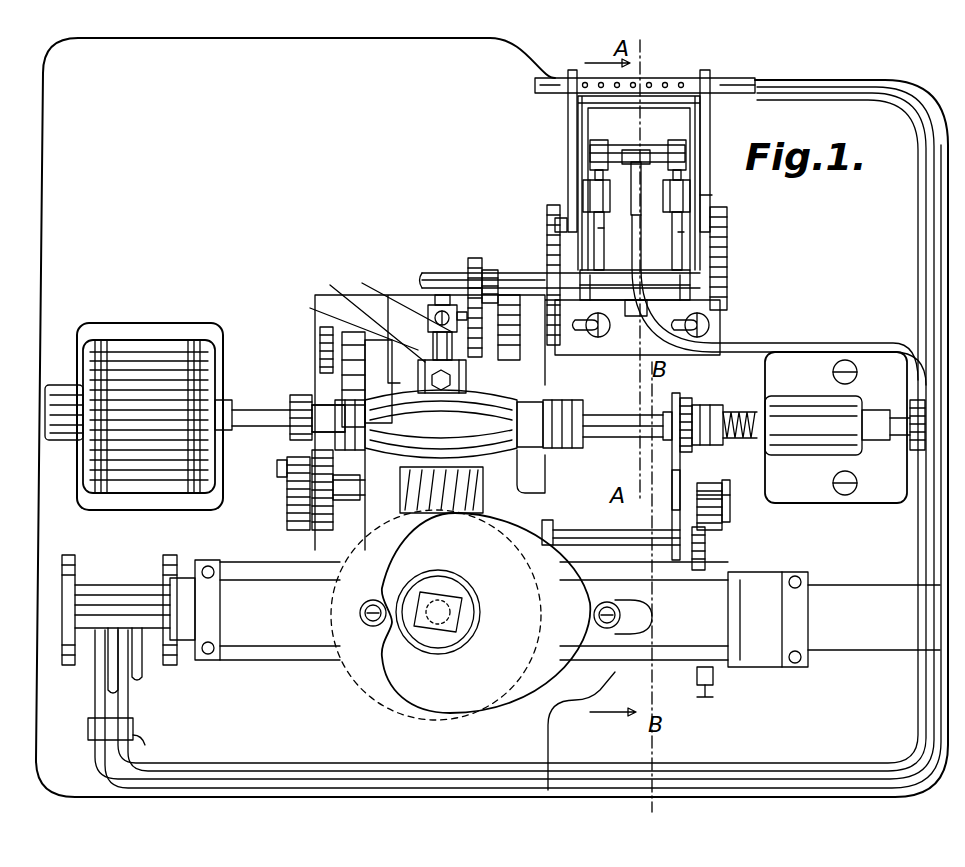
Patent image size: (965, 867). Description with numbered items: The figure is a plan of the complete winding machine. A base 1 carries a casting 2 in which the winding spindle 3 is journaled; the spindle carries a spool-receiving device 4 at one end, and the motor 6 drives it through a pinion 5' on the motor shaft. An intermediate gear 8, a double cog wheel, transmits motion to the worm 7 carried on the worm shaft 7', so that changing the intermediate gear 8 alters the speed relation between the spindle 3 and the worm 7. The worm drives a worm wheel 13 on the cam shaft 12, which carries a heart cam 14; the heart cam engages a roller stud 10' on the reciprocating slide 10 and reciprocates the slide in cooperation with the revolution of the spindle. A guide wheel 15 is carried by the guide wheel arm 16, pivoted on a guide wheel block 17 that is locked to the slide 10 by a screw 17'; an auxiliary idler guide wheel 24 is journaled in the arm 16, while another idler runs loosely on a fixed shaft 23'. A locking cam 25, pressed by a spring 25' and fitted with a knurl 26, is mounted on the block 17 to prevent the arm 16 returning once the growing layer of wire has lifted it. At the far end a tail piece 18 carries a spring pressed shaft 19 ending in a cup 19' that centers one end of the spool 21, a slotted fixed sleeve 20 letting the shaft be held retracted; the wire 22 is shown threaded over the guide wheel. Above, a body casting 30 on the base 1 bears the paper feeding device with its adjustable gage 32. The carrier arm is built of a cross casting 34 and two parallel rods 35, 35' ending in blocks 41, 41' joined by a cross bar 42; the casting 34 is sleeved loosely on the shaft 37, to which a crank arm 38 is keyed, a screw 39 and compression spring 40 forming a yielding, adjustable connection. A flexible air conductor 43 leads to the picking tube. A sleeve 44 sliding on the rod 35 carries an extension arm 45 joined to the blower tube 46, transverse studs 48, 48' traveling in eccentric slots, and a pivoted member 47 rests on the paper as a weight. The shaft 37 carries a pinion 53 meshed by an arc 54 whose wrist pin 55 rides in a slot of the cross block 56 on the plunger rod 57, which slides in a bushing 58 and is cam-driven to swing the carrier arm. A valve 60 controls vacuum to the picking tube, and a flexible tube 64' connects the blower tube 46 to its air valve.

The base 1 is at (58, 178).
The casting 2 is at (415, 308).
The winding spindle 3 is at (325, 410).
The spool-receiving device 4 is at (555, 447).
The pinion 5' is at (288, 393).
The motor 6 is at (182, 358).
The worm 7 is at (349, 515).
The worm shaft 7' is at (319, 505).
The intermediate gear 8 is at (287, 493).
The reciprocating slide 10 is at (580, 626).
The roller stud 10' is at (290, 621).
The cam shaft 12 is at (433, 615).
The worm wheel 13 is at (418, 708).
The heart cam 14 is at (512, 698).
The guide wheel 15 is at (690, 408).
The guide wheel arm 16 is at (703, 434).
The guide wheel block 17 is at (768, 604).
The screw 17' is at (733, 684).
The tail piece 18 is at (805, 358).
The spring pressed shaft 19 is at (899, 465).
The cup 19' is at (800, 374).
The fixed sleeve 20 is at (865, 462).
The spool 21 is at (622, 428).
The wire 22 is at (678, 398).
The fixed shaft 23' is at (611, 517).
The auxiliary idler guide wheel 24 is at (672, 505).
The cam 25 is at (727, 495).
The spring 25' is at (750, 501).
The knurl 26 is at (728, 495).
The body casting 30 is at (580, 262).
The adjustable gage 32 is at (672, 108).
The cross casting 34 is at (690, 298).
The parallel rod 35 is at (679, 242).
The parallel rod 35' is at (522, 230).
The shaft 37 is at (422, 278).
The crank arm 38 is at (620, 322).
The screw 39 is at (636, 322).
The spiral compression spring 40 is at (548, 275).
The block 41 is at (692, 182).
The block 41' is at (606, 155).
The cross bar 42 is at (625, 148).
The flexible air conductor 43 is at (100, 768).
The sleeve 44 is at (712, 200).
The extension arm 45 is at (560, 80).
The blower tube 46 is at (672, 82).
The member 47 is at (622, 192).
The transverse stud 48 is at (743, 258).
The transverse stud 48' is at (556, 269).
The pinion 53 is at (474, 262).
The arc 54 is at (515, 338).
The wrist pin 55 is at (462, 316).
The cross block 56 is at (393, 297).
The plunger rod 57 is at (365, 313).
The bushing 58 is at (350, 320).
The valve 60 is at (140, 598).
The flexible tube 64' is at (157, 743).